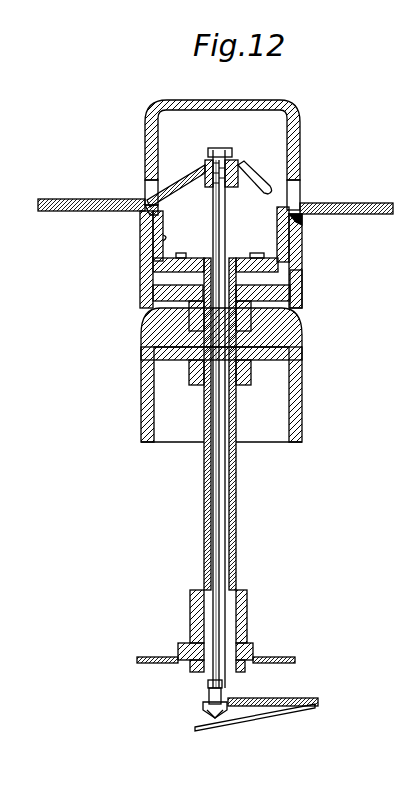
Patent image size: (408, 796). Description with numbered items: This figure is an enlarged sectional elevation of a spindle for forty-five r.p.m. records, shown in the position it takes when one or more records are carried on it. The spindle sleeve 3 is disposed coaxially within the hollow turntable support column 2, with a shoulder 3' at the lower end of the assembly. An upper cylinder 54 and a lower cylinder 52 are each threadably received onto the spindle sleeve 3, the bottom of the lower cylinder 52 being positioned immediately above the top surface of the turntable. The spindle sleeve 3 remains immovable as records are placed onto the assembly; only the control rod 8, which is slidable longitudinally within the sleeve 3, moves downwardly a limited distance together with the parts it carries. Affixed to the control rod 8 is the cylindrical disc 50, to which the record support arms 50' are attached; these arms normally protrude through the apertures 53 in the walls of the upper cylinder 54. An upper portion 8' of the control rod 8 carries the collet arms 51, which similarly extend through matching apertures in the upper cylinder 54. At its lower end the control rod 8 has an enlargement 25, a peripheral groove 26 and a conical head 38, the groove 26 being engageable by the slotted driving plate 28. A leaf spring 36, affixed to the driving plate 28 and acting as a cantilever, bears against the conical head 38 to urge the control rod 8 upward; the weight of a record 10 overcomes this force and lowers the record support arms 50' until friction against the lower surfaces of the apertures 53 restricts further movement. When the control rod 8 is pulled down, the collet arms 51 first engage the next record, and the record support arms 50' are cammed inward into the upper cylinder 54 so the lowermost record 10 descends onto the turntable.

The record 10 is at (352, 204).
The collet arms 51 is at (262, 188).
The upper portion of the control rod 8' is at (233, 187).
The apertures 53 is at (144, 214).
The record support arms 50' is at (225, 241).
The cylindrical disc 50 is at (221, 239).
The upper cylinder 54 is at (146, 283).
The lower cylinder 52 is at (300, 412).
The spindle sleeve 3 is at (238, 424).
The control rod 8 is at (243, 419).
The turntable support column 2 is at (248, 594).
The shoulder 3' is at (218, 647).
The enlargement 25 is at (208, 682).
The peripheral groove 26 is at (207, 694).
The slotted driving plate 28 is at (204, 706).
The conical head 38 is at (212, 718).
The leaf spring 36 is at (240, 722).